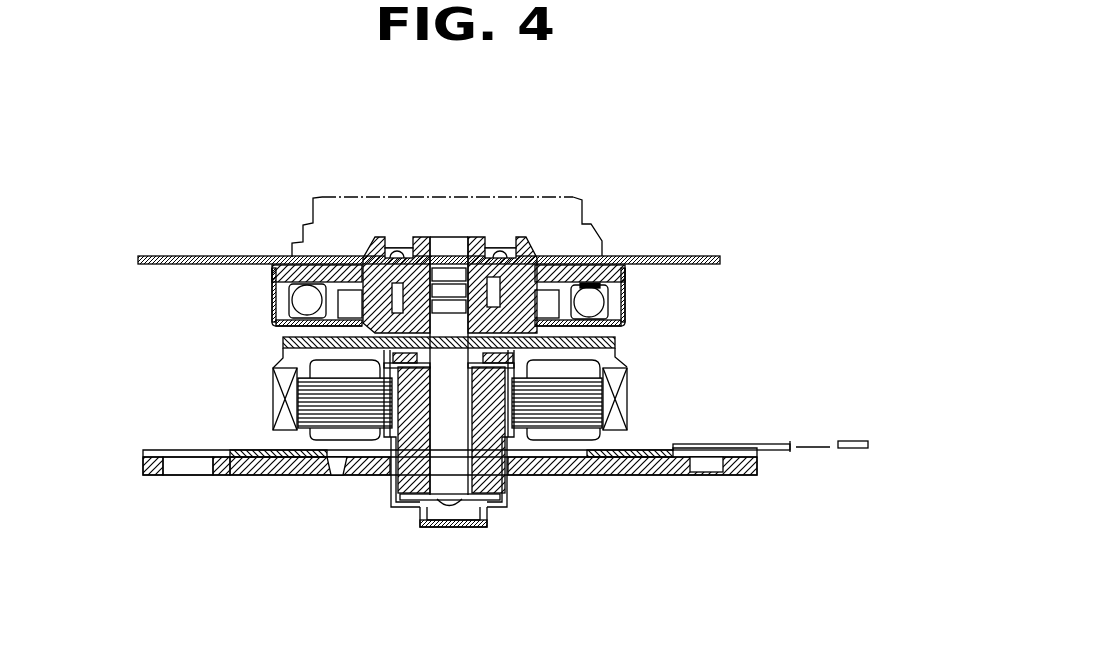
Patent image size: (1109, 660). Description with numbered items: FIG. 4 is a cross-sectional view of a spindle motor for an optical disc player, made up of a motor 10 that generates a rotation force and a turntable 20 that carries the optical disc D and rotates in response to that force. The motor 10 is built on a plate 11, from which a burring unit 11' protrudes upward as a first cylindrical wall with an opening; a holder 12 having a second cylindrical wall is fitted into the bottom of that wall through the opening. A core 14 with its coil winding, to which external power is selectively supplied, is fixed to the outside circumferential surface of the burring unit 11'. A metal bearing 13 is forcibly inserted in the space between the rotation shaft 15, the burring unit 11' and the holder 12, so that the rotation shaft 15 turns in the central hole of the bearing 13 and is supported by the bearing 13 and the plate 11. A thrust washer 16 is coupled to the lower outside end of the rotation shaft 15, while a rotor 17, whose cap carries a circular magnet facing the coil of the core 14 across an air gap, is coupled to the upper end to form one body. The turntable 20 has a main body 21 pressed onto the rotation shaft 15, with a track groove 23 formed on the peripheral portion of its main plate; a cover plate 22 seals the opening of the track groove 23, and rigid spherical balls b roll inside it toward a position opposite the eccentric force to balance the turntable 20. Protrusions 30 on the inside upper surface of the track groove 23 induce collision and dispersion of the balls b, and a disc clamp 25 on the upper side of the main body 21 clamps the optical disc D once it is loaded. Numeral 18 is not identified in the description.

The motor 10 is at (235, 415).
The plate 11 is at (465, 498).
The burring unit 11' is at (549, 495).
The holder 12 is at (508, 497).
The metal bearing 13 is at (345, 452).
The core 14 is at (600, 348).
The rotation shaft 15 is at (447, 272).
The thrust washer 16 is at (393, 487).
The rotor 17 is at (274, 372).
The stator coil 18 is at (618, 386).
The turntable 20 is at (619, 223).
The main body 21 is at (463, 244).
The cover plate 22 is at (272, 322).
The track groove 23 is at (279, 276).
The disc clamp 25 is at (573, 198).
The protrusions 30 is at (620, 296).
The balls b is at (302, 304).
The optical disc D is at (698, 256).